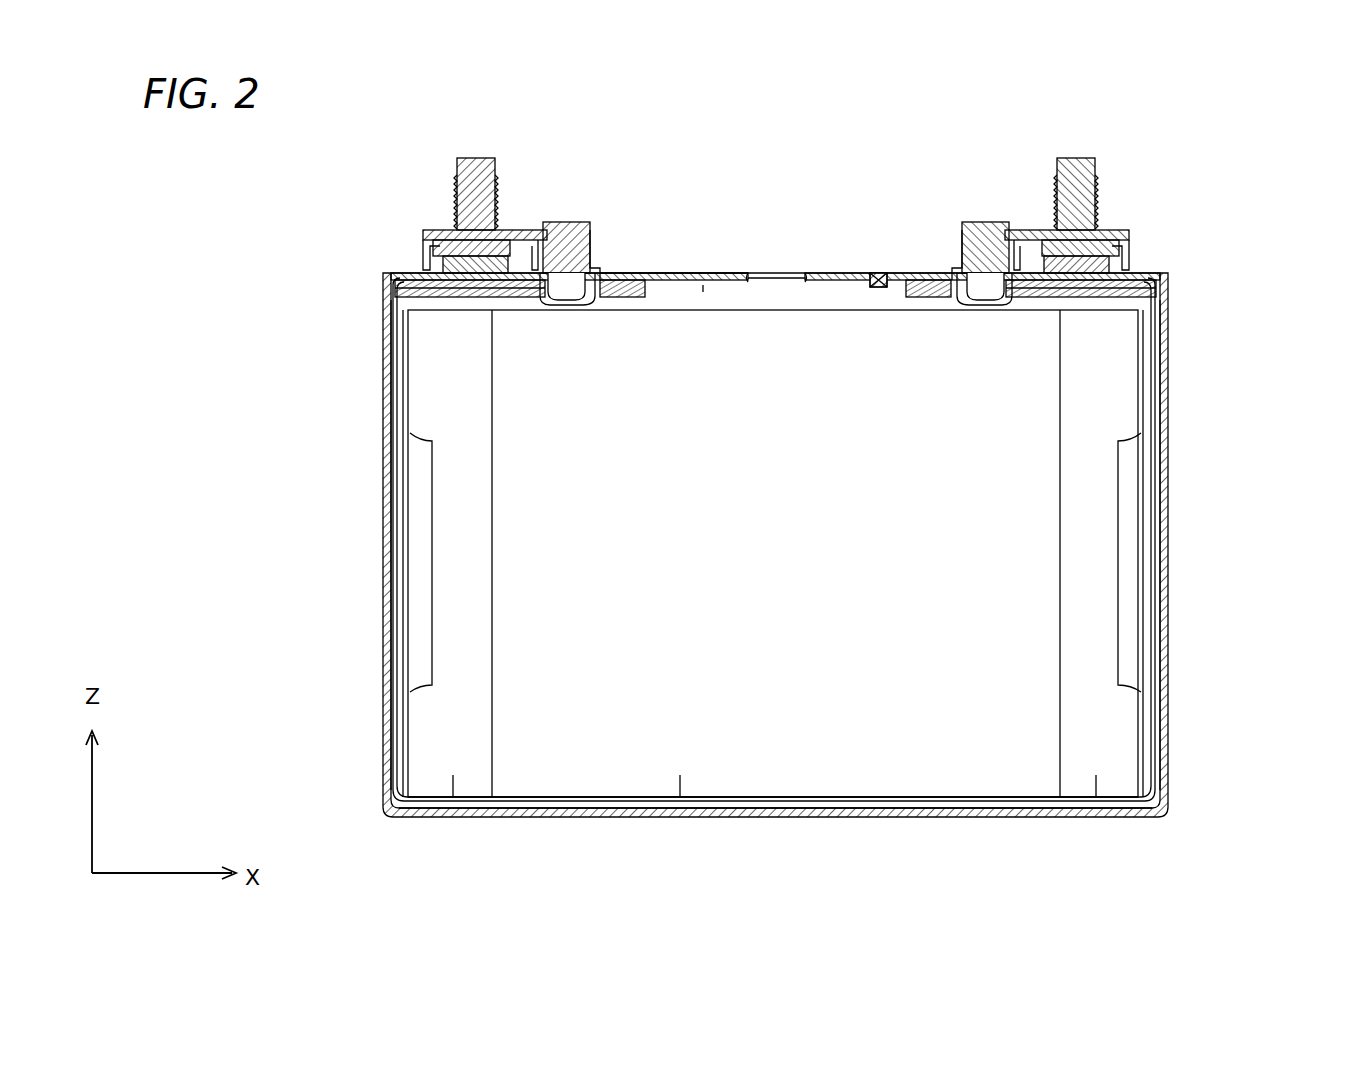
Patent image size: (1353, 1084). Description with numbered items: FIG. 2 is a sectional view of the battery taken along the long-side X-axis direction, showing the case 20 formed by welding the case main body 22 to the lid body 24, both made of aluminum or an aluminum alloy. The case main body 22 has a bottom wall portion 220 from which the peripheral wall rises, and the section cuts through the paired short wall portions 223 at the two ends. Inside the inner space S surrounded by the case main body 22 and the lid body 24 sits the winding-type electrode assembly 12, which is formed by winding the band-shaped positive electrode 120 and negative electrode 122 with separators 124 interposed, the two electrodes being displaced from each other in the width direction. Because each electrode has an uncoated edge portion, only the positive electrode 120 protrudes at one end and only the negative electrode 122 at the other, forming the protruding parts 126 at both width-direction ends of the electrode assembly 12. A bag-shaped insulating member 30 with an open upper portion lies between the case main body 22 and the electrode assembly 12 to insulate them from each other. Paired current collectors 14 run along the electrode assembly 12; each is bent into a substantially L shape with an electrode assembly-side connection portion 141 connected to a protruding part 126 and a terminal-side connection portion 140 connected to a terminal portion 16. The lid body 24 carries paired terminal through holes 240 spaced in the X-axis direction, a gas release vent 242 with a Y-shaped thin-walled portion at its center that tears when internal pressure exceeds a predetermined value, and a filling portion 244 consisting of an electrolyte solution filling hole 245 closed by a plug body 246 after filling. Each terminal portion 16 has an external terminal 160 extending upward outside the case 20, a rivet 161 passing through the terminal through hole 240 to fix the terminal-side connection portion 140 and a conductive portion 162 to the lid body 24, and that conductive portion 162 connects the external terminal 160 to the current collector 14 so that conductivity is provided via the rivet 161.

The electrode assembly 12 is at (796, 499).
The current collector 14 is at (773, 618).
The terminal portion 16 is at (496, 188).
The case 20 is at (796, 520).
The case main body 22 is at (774, 590).
The lid body 24 is at (842, 210).
The insulating member 30 is at (1160, 768).
The positive electrode 120 is at (453, 802).
The negative electrode 122 is at (1096, 777).
The separator 124 is at (680, 780).
The protruding part 126 is at (467, 803).
The terminal-side connection portion 140 is at (468, 295).
The electrode assembly-side connection portion 141 is at (408, 483).
The external terminal 160 is at (470, 160).
The rivet 161 is at (585, 222).
The conductive portion 162 is at (430, 229).
The bottom wall portion 220 is at (945, 818).
The short wall portion 223 is at (383, 633).
The terminal through hole 240 is at (660, 272).
The gas release vent 242 is at (778, 273).
The filling portion 244 is at (880, 210).
The electrolyte solution filling hole 245 is at (872, 272).
The plug body 246 is at (906, 229).
The inner space S is at (710, 272).